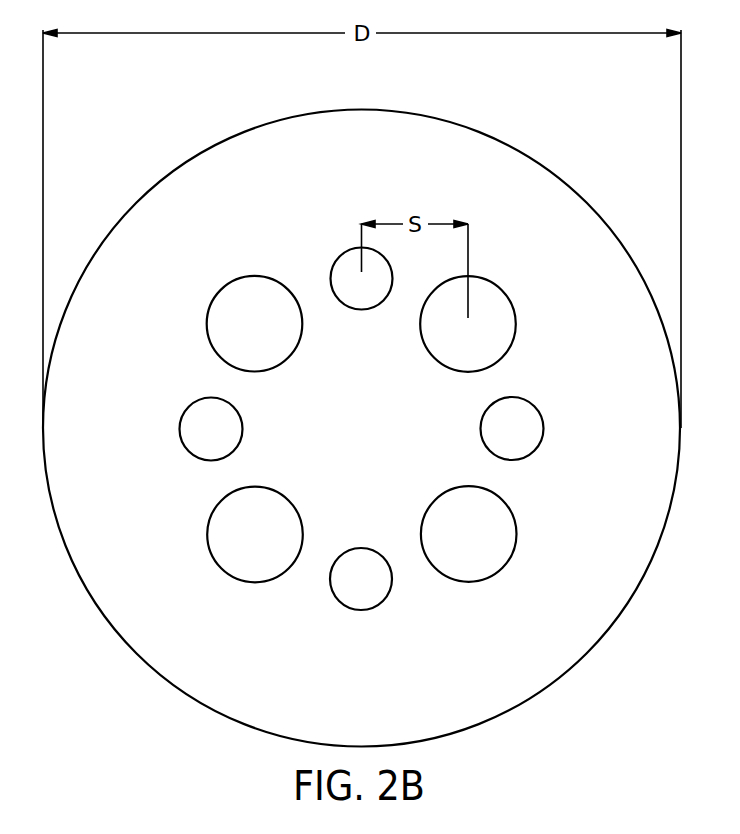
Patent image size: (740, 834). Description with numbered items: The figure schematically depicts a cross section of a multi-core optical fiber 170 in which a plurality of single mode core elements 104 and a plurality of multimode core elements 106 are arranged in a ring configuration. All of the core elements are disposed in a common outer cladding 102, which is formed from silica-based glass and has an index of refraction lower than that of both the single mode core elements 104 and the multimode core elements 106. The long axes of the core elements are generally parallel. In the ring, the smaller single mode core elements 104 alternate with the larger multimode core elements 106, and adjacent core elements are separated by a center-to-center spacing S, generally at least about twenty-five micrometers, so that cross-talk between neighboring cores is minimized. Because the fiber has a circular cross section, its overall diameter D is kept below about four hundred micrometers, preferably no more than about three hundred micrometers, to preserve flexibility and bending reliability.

The multi-core optical fiber 170 is at (361, 394).
The common outer cladding 102 is at (618, 247).
The single mode core element 104 is at (188, 405).
The multimode core element 106 is at (229, 285).